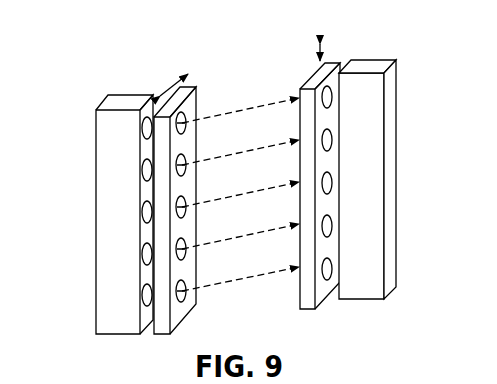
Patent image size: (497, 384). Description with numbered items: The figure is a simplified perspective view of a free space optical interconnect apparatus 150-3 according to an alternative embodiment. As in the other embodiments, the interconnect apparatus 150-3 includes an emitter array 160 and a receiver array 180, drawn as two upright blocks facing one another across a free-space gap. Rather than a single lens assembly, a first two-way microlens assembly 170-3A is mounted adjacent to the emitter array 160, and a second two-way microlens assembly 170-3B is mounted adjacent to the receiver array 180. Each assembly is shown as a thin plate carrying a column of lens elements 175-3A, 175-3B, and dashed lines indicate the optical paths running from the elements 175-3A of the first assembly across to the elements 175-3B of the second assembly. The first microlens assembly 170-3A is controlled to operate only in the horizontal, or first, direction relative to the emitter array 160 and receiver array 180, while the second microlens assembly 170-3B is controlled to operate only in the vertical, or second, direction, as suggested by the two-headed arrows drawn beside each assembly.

The free space optical interconnect apparatus 150-3 is at (66, 178).
The emitter array 160 is at (123, 97).
The first two-way microlens assembly 170-3A is at (199, 106).
The second two-way microlens assembly 170-3B is at (313, 89).
The nozzles of first plate 175-3A is at (186, 126).
The nozzles of second plate 175-3B is at (323, 91).
The receiver array 180 is at (392, 85).